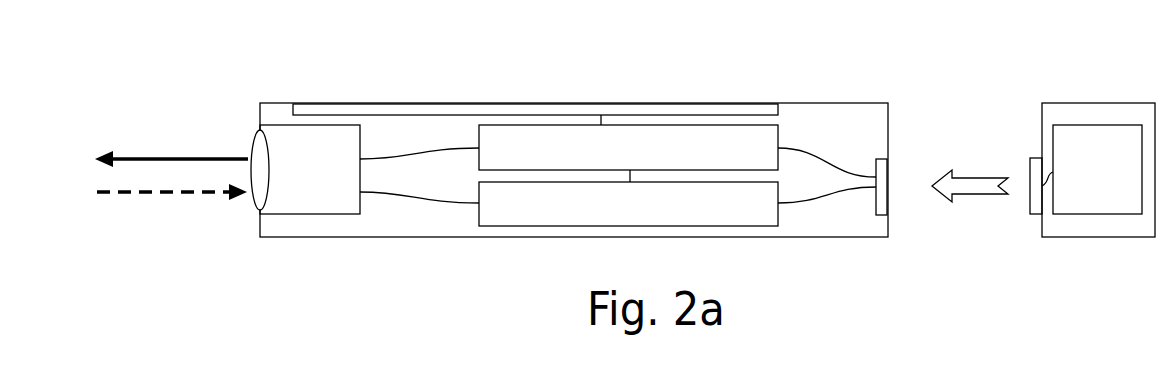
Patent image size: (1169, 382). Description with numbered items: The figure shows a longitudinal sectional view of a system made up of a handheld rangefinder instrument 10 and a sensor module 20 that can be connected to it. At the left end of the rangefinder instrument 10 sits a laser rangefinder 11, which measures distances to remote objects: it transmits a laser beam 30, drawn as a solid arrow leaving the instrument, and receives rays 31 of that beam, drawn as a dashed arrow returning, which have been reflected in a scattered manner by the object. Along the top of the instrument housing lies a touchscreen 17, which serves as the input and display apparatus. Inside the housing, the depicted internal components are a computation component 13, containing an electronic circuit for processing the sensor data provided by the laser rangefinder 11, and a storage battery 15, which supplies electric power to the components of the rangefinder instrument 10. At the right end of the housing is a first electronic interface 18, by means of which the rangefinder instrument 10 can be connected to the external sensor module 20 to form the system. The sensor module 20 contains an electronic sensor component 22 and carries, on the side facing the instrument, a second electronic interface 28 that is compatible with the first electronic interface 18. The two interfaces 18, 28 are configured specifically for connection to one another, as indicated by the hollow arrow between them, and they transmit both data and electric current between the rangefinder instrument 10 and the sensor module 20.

The rangefinder instrument 10 is at (336, 68).
The laser rangefinder 11 is at (296, 184).
The computation component 13 is at (615, 163).
The storage battery 15 is at (615, 217).
The touchscreen 17 is at (525, 103).
The first electronic interface 18 is at (884, 192).
The sensor module 20 is at (1074, 66).
The electronic sensor component 22 is at (1083, 185).
The second electronic interface 28 is at (1036, 210).
The laser beam 30 is at (185, 157).
The rays of the laser beam 31 is at (190, 195).